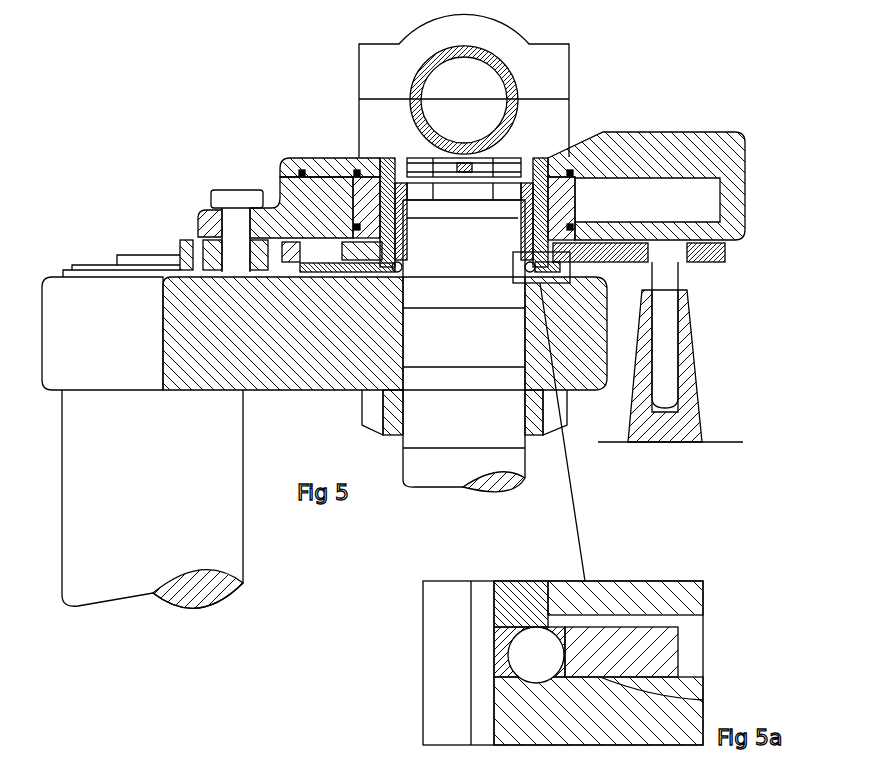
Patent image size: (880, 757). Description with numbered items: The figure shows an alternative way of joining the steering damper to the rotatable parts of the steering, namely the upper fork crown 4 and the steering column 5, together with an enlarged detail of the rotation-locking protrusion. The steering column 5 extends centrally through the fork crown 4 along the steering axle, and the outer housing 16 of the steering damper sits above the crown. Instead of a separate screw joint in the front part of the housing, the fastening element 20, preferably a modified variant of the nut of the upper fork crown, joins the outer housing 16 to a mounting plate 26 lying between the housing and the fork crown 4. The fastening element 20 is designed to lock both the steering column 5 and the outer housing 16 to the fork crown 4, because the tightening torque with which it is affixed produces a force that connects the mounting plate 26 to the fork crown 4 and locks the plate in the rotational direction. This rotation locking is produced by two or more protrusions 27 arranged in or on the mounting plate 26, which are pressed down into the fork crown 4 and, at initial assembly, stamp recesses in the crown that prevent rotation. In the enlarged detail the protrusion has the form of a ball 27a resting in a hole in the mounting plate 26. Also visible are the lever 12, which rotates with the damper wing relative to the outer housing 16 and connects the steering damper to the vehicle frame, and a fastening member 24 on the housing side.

In FIG. 5, the upper fork crown 4 is at (195, 320).
In FIG. 5A, the upper fork crown 4 is at (512, 723).
In FIG. 5, the steering column 5 is at (460, 412).
In FIG. 5, the lever 12 is at (715, 260).
In FIG. 5, the outer housing 16 is at (735, 132).
In FIG. 5, the fastening element 20 is at (375, 165).
In FIG. 5A, the fastening element 20 is at (500, 590).
In FIG. 5, the fastening member 24 is at (235, 195).
In FIG. 5, the mounting plate 26 is at (208, 248).
In FIG. 5A, the mounting plate 26 is at (495, 640).
In FIG. 5, the protrusions 27 is at (538, 271).
In FIG. 5A, the ball 27a is at (528, 654).